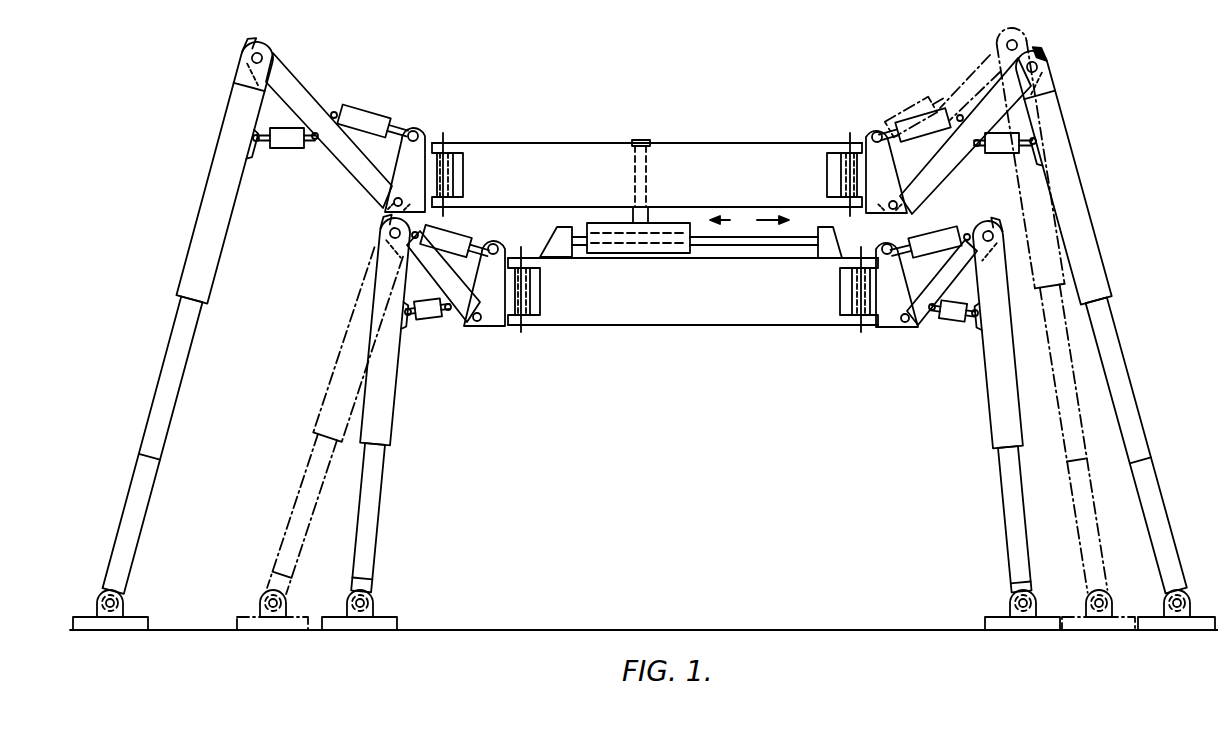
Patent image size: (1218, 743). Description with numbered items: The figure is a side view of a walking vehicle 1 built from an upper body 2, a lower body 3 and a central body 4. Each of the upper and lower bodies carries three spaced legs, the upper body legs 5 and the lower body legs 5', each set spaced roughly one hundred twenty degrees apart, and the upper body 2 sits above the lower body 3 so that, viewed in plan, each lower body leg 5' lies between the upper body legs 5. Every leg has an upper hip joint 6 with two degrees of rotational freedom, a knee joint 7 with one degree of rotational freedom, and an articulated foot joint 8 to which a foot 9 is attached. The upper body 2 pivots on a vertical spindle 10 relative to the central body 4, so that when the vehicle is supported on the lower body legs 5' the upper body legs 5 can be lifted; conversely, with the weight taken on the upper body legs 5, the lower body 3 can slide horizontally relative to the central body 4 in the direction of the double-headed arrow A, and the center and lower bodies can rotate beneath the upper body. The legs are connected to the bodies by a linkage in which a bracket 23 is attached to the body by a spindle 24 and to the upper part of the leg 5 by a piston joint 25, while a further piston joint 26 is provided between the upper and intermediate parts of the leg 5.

The vehicle 1 is at (1110, 179).
The upper body 2 is at (732, 151).
The lower body 3 is at (732, 300).
The central body 4 is at (661, 227).
The upper body leg 5 is at (177, 332).
The lower body leg 5' is at (371, 422).
The hip joint 6 is at (871, 126).
The knee joint 7 is at (1039, 70).
The foot joint 8 is at (1017, 601).
The foot 9 is at (996, 622).
The vertical spindle 10 is at (633, 215).
The bracket 23 is at (411, 152).
The spindle 24 is at (444, 178).
The piston joint 25 is at (364, 117).
The piston joint 26 is at (287, 146).